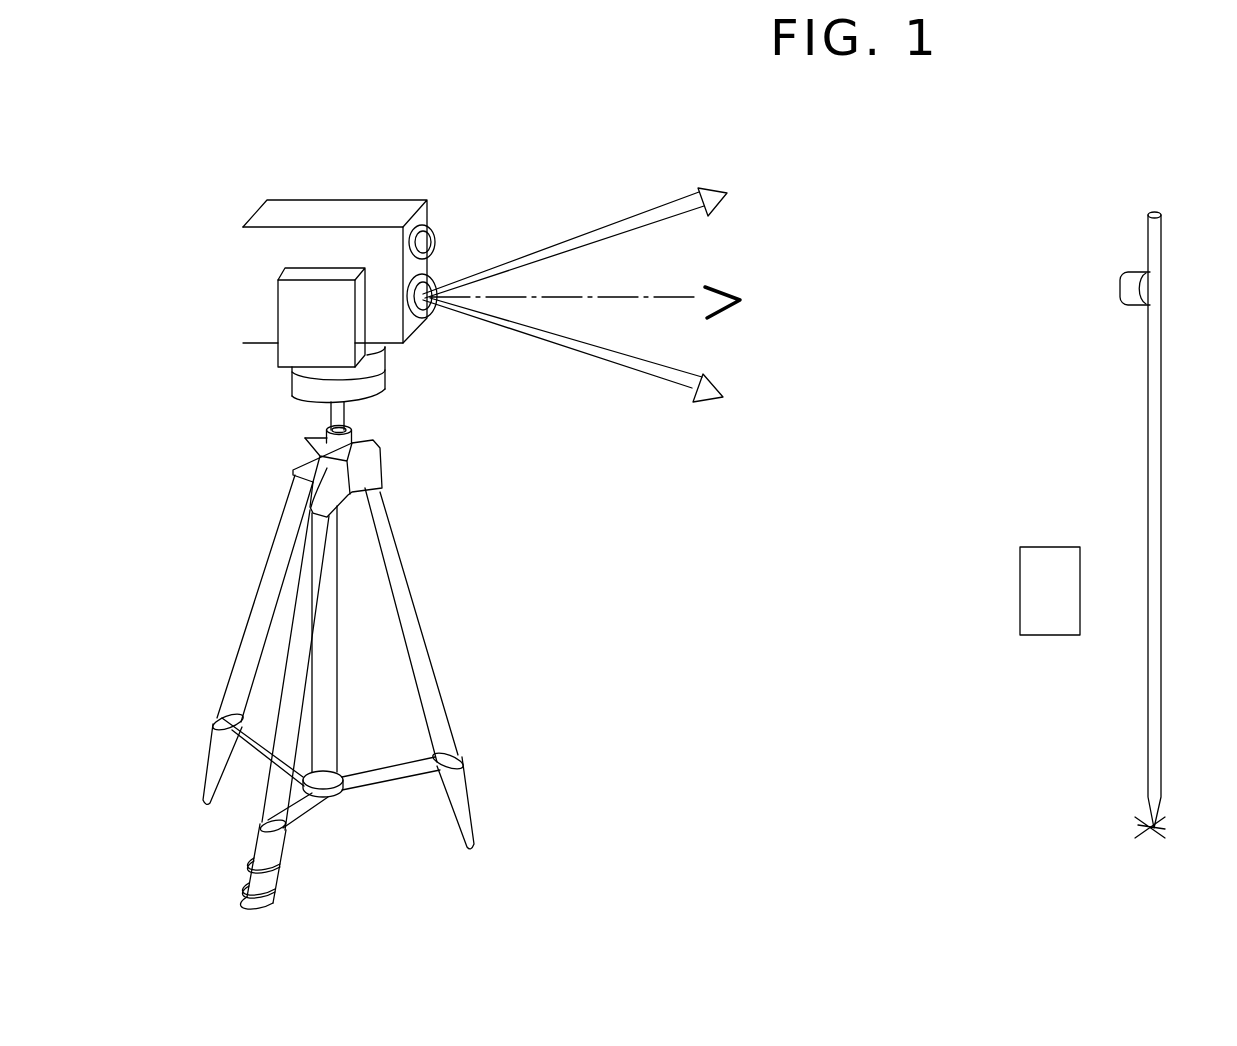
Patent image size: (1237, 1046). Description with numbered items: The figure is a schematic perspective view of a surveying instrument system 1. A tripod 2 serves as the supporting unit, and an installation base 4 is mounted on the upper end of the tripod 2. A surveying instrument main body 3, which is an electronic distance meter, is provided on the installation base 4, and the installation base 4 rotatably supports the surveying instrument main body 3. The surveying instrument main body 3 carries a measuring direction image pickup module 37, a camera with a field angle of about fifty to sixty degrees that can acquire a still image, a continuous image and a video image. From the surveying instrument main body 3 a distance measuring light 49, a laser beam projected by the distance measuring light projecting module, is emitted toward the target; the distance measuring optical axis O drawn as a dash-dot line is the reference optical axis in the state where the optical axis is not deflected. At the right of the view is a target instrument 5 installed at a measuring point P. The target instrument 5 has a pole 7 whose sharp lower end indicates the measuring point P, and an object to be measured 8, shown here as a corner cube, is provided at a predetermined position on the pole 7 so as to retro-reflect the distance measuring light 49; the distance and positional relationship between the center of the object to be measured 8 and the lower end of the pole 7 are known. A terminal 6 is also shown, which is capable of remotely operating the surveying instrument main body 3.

The surveying instrument system 1 is at (669, 133).
The tripod 2 is at (252, 612).
The surveying instrument main body 3 is at (290, 200).
The installation base 4 is at (267, 407).
The measuring direction image pickup module 37 is at (437, 238).
The distance measuring light 49 is at (570, 240).
The target instrument 5 is at (1143, 502).
The terminal 6 is at (1052, 635).
The pole 7 is at (1160, 550).
The object to be measured 8 is at (1128, 307).
The distance measuring optical axis O is at (572, 293).
The measuring point P is at (1143, 840).